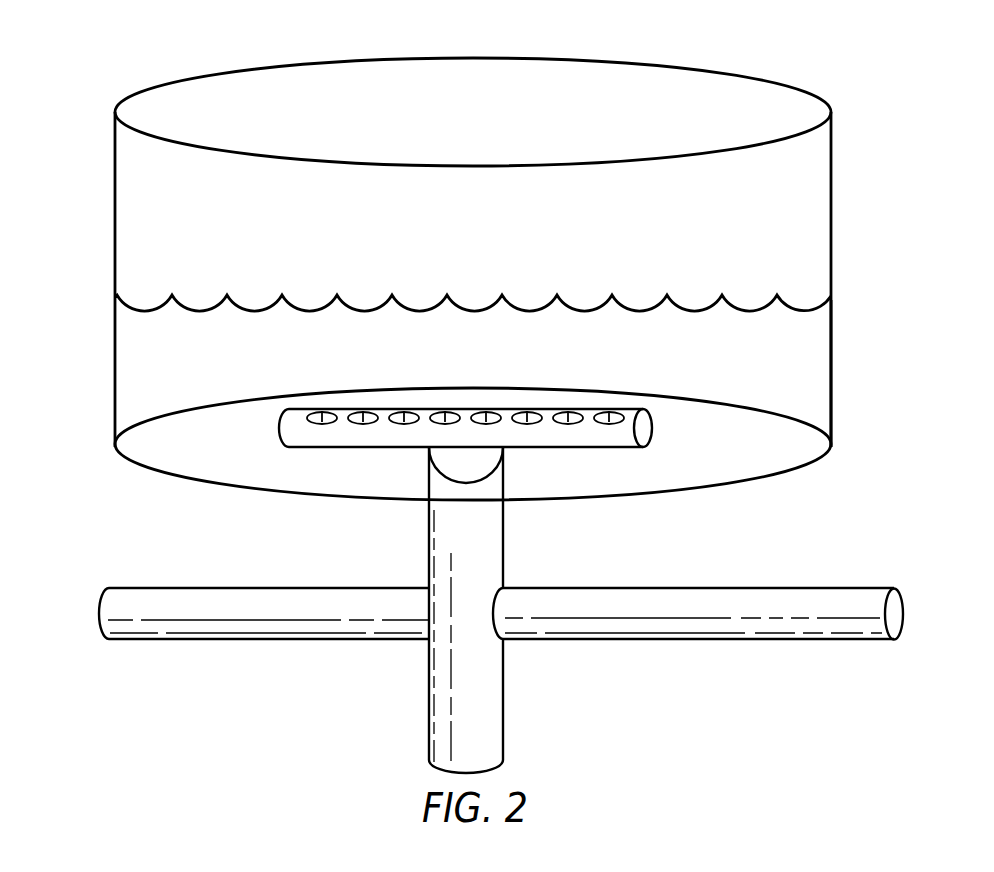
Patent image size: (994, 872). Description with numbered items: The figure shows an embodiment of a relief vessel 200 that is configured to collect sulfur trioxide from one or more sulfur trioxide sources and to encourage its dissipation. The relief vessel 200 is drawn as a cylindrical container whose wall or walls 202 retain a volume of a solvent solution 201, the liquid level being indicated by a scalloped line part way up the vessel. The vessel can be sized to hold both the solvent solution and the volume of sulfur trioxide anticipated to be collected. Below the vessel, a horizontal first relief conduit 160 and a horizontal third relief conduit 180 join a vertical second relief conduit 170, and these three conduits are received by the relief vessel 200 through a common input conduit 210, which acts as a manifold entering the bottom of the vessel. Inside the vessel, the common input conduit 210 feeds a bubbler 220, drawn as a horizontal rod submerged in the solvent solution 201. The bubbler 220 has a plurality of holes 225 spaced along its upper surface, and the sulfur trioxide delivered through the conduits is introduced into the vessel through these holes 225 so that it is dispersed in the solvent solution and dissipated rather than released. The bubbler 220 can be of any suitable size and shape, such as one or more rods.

The relief vessel 200 is at (112, 28).
The solvent solution 201 is at (152, 357).
The wall 202 is at (832, 372).
The common input conduit 210 is at (429, 462).
The bubbler 220 is at (652, 428).
The holes 225 is at (404, 411).
The first relief conduit 160 is at (265, 641).
The second relief conduit 170 is at (505, 695).
The third relief conduit 180 is at (700, 641).